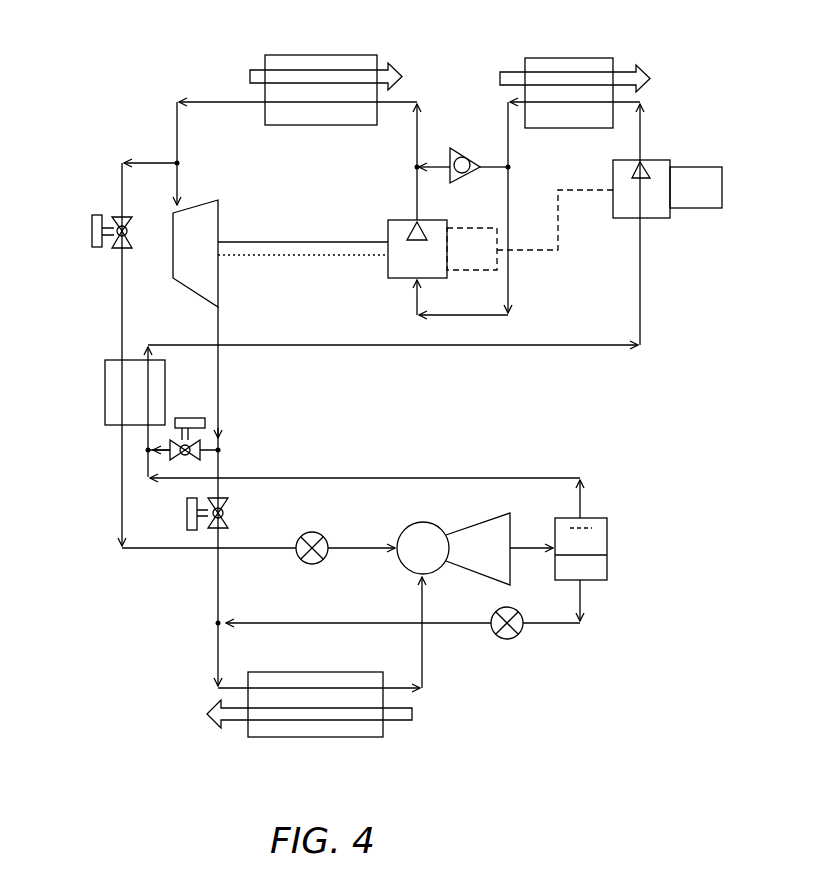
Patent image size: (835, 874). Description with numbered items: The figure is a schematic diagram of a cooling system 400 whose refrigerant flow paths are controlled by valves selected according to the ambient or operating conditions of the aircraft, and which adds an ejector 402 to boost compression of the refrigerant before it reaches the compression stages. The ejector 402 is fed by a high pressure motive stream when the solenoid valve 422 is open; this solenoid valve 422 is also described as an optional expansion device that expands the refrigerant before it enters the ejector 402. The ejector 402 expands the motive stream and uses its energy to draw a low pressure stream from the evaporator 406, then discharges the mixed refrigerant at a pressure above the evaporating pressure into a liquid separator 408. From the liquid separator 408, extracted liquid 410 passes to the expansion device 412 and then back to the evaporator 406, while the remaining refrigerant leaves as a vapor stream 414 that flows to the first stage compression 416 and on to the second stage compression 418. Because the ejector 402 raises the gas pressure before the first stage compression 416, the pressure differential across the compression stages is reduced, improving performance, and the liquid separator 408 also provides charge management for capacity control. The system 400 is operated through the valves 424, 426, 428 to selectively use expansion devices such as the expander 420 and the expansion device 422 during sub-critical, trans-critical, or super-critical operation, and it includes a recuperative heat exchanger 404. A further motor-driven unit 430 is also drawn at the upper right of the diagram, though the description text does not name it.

The cooling system 400 is at (736, 70).
The ejector 402 is at (482, 520).
The recuperative heat exchanger 404 is at (105, 375).
The evaporator 406 is at (345, 737).
The liquid separator 408 is at (607, 525).
The extracted liquid 410 is at (556, 638).
The expansion device 412 is at (504, 639).
The vapor stream 414 is at (550, 465).
The first stage compression 416 is at (600, 276).
The second stage compression 418 is at (340, 321).
The expander 420 is at (172, 257).
The solenoid valve 422 is at (300, 560).
The valve 424 is at (98, 215).
The valve 426 is at (205, 423).
The valve 428 is at (192, 532).
The pump 430 is at (583, 187).